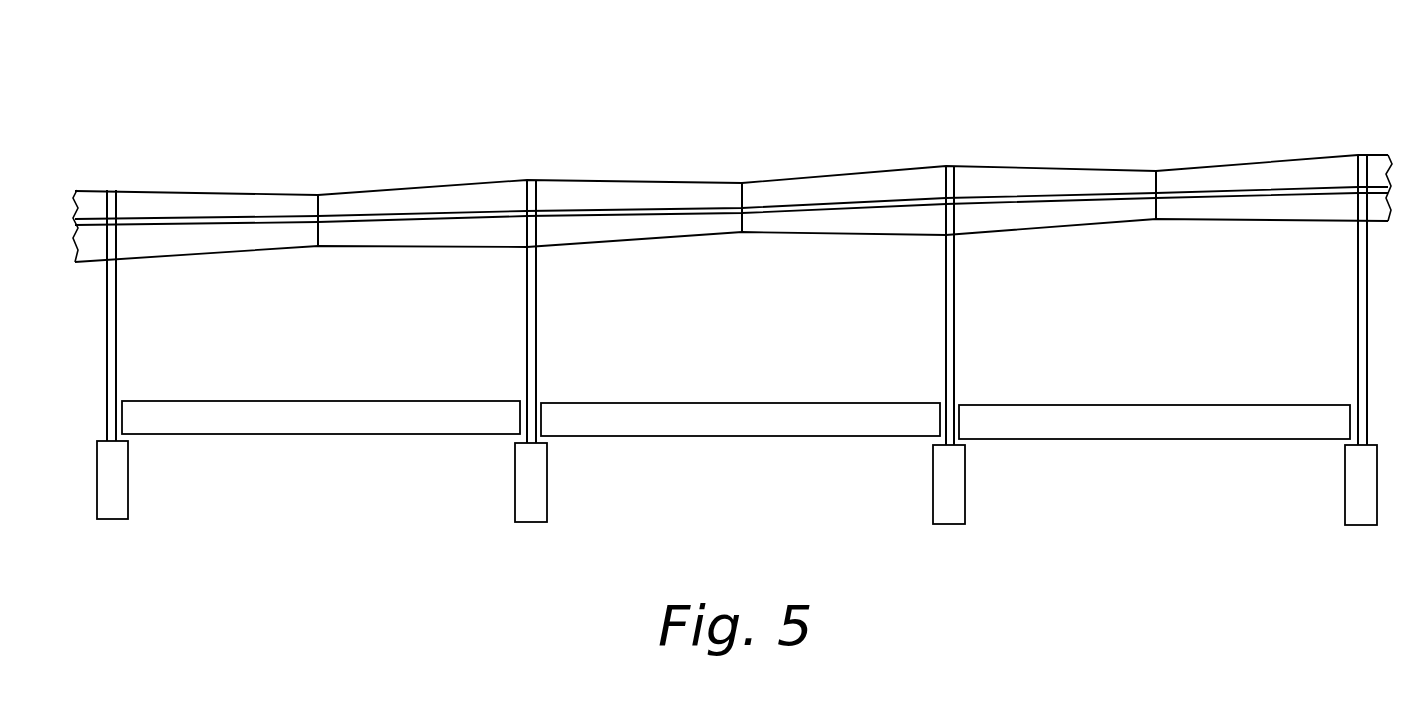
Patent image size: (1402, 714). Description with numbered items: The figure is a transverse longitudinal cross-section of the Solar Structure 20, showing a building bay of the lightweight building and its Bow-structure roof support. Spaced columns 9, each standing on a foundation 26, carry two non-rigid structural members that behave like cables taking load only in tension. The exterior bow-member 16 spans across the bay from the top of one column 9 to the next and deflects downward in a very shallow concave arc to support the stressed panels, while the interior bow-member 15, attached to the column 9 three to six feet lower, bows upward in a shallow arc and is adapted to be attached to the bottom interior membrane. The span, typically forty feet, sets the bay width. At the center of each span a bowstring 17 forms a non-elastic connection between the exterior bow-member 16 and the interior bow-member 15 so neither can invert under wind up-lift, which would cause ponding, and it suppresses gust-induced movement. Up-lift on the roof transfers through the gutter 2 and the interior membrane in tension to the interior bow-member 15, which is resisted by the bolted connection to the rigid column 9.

The Solar Structure 20 is at (1222, 108).
The exterior bow-member 16 is at (568, 179).
The gutter 2 is at (682, 210).
The interior bow-member 15 is at (612, 243).
The bowstring 17 is at (318, 197).
The column 9 is at (117, 323).
The foundation 26 is at (115, 475).